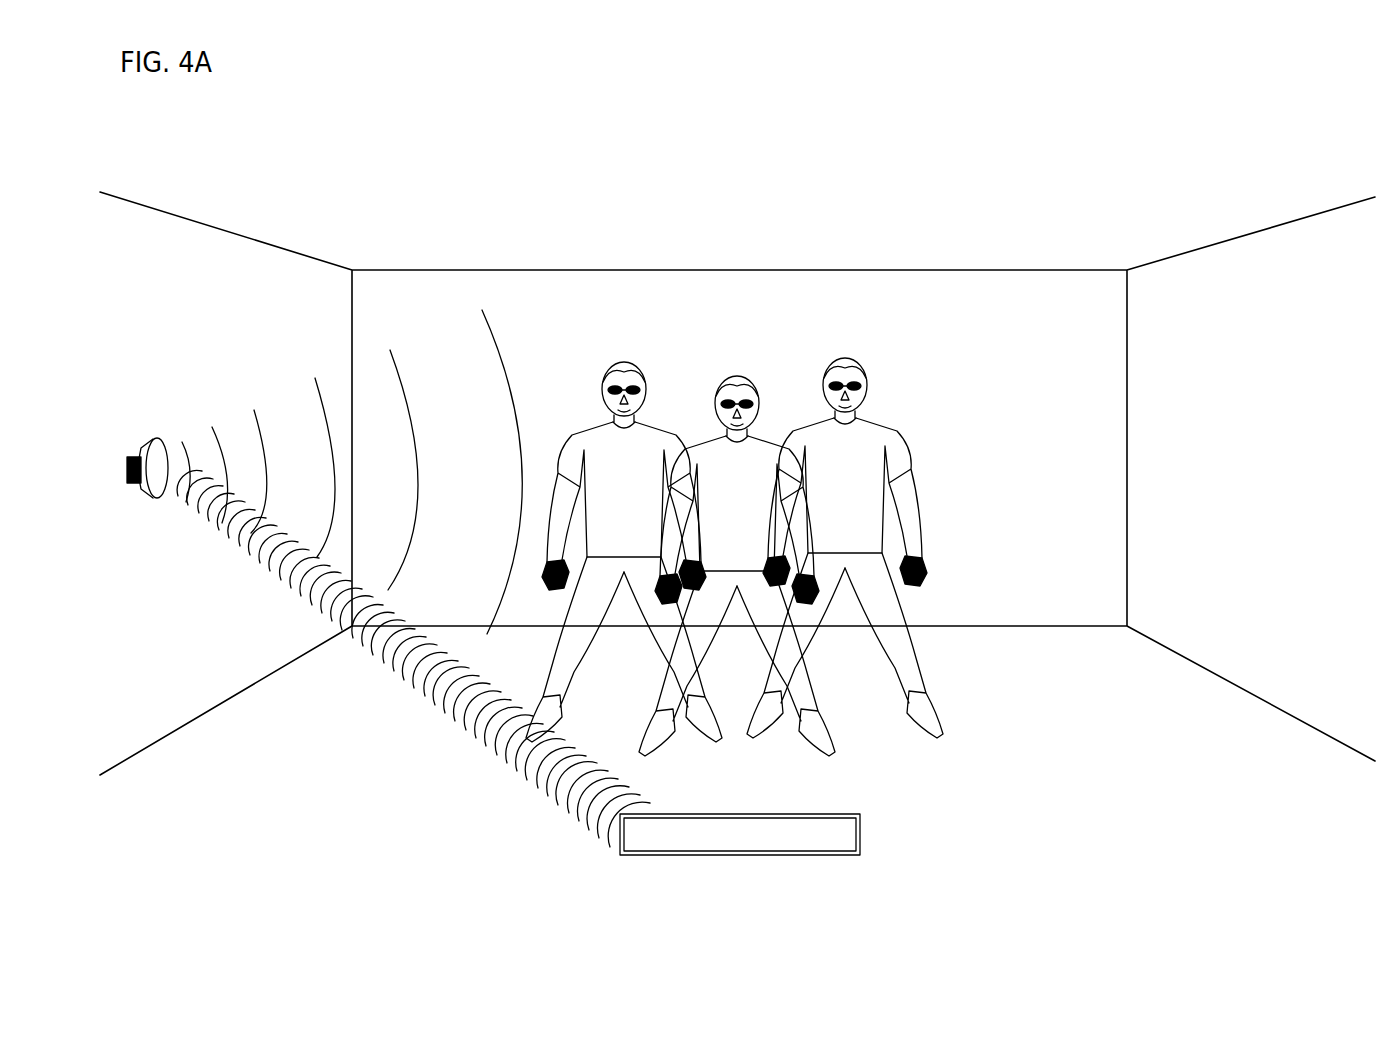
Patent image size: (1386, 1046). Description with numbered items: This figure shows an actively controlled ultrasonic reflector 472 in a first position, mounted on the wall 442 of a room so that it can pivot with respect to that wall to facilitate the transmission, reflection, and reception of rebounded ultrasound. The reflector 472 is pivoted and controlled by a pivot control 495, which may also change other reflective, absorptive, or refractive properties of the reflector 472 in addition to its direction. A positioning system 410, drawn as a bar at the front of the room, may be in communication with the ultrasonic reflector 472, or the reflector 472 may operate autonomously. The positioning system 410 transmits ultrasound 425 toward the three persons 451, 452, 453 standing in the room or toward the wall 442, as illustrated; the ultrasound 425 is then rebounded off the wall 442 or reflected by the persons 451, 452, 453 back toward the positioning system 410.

The positioning system 410 is at (762, 859).
The ultrasound 425 is at (520, 767).
The wall 442 is at (290, 636).
The person 451 is at (615, 365).
The person 452 is at (727, 377).
The person 453 is at (837, 359).
The actively controlled ultrasonic reflector 472 is at (158, 440).
The pivot control 495 is at (131, 483).